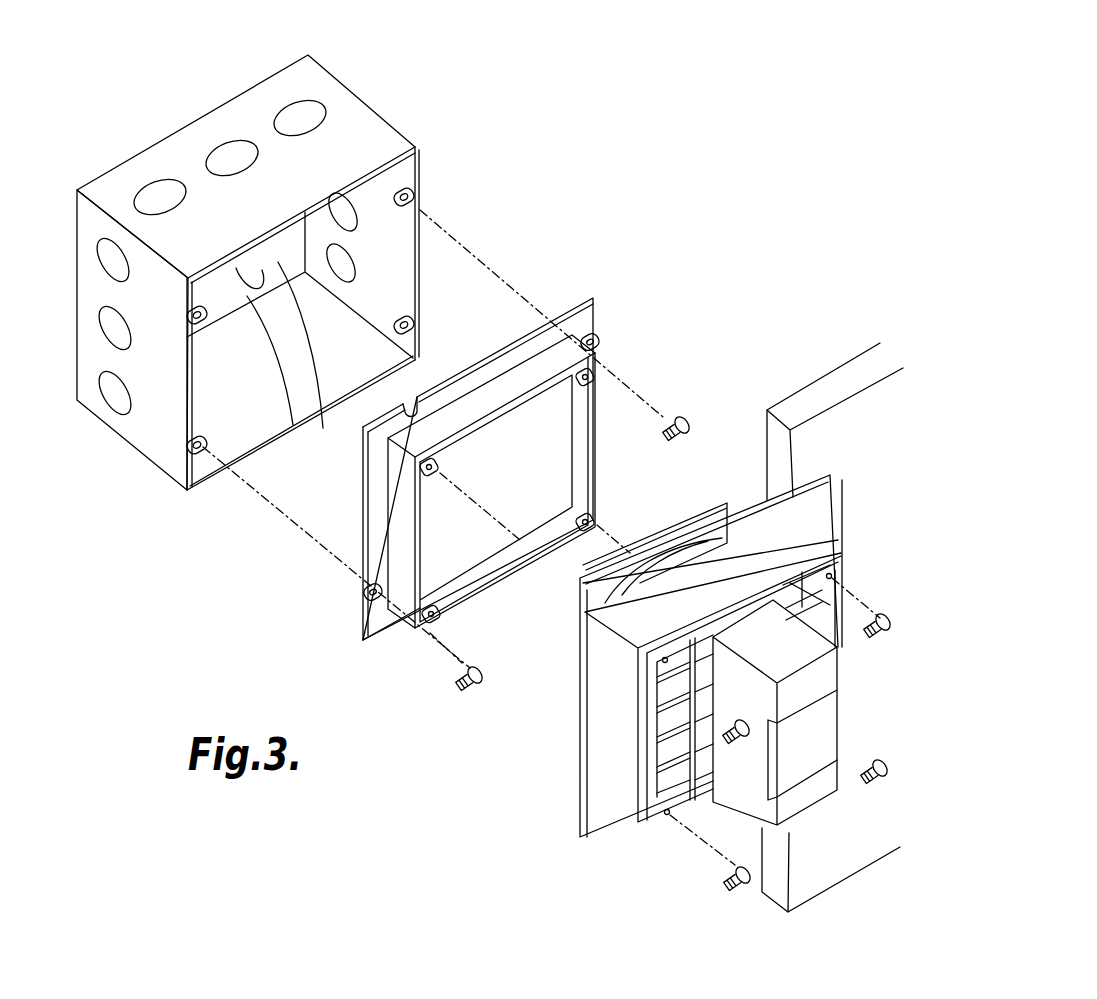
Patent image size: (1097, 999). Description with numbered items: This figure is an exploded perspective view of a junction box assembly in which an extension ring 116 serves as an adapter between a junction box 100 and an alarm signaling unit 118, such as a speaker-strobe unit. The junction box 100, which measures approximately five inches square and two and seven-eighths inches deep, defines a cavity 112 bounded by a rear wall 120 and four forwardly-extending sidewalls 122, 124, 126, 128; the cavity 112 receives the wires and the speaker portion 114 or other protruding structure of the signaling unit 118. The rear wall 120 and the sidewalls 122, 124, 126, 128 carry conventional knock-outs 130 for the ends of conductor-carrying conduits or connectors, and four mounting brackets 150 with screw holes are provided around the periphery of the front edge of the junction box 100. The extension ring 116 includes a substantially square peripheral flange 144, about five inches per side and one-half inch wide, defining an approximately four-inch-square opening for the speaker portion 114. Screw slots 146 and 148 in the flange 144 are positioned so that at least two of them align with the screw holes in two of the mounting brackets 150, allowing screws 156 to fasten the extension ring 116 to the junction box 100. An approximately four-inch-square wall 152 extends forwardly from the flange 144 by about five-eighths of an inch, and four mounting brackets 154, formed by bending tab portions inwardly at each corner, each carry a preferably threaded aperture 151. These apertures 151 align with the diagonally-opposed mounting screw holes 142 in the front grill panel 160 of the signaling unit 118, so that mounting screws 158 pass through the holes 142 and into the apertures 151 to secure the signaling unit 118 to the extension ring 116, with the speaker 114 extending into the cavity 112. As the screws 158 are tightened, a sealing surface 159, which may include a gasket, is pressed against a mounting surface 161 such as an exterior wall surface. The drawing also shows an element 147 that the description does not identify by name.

The junction box 100 is at (392, 75).
The cavity 112 is at (192, 410).
The speaker portion 114 is at (727, 503).
The extension ring 116 is at (600, 289).
The alarm signaling unit 118 is at (533, 812).
The rear wall 120 is at (292, 425).
The sidewall 122 is at (143, 428).
The sidewall 124 is at (394, 134).
The sidewall 126 is at (403, 240).
The sidewall 128 is at (247, 440).
The knock-outs 130 is at (230, 150).
The mounting screw holes 142 is at (831, 575).
The peripheral flange 144 is at (375, 492).
The screw slot 146 is at (598, 340).
The frame 147 is at (472, 538).
The screw slot 148 is at (410, 398).
The mounting brackets 150 is at (415, 198).
The aperture 151 is at (588, 381).
The wall 152 is at (410, 613).
The mounting brackets 154 is at (436, 465).
The screws 156 is at (485, 681).
The mounting screws 158 is at (885, 632).
The sealing surface 159 is at (582, 838).
The front grill panel 160 is at (663, 827).
The mounting surface 161 is at (828, 423).